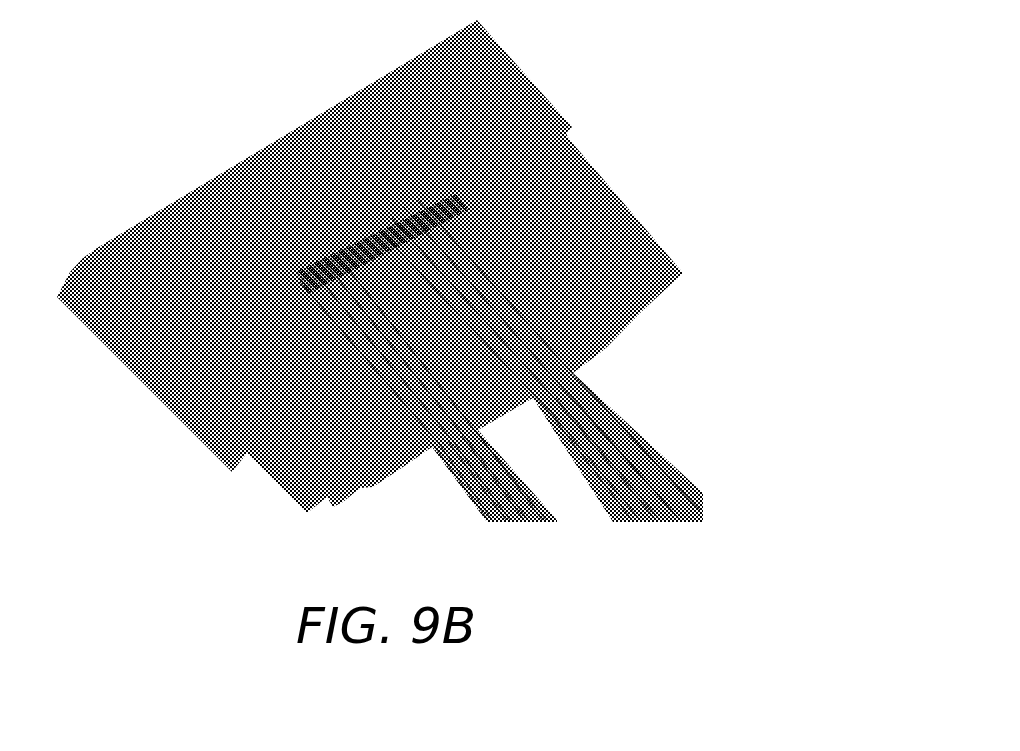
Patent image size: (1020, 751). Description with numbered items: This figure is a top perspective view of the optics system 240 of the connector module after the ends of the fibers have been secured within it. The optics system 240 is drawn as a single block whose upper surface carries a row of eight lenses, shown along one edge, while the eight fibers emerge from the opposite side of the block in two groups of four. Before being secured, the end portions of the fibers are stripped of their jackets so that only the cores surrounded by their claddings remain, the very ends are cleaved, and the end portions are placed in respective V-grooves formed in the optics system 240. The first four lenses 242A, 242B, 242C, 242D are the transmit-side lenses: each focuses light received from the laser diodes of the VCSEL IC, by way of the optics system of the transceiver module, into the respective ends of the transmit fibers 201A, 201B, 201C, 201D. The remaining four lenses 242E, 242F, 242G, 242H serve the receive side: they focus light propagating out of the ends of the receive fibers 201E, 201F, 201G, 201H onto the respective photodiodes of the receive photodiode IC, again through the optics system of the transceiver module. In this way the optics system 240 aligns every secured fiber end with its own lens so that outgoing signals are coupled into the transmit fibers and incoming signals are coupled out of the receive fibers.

The optics system 240 is at (602, 93).
The lens 242A is at (298, 283).
The lens 242B is at (312, 272).
The lens 242C is at (322, 266).
The lens 242D is at (328, 258).
The lens 242E is at (416, 200).
The lens 242F is at (403, 206).
The lens 242G is at (396, 220).
The lens 242H is at (382, 232).
The transmit fiber 201A is at (432, 448).
The transmit fiber 201B is at (463, 455).
The transmit fiber 201C is at (473, 443).
The transmit fiber 201D is at (481, 433).
The receive fiber 201E is at (580, 381).
The receive fiber 201F is at (592, 392).
The receive fiber 201G is at (565, 395).
The receive fiber 201H is at (557, 405).